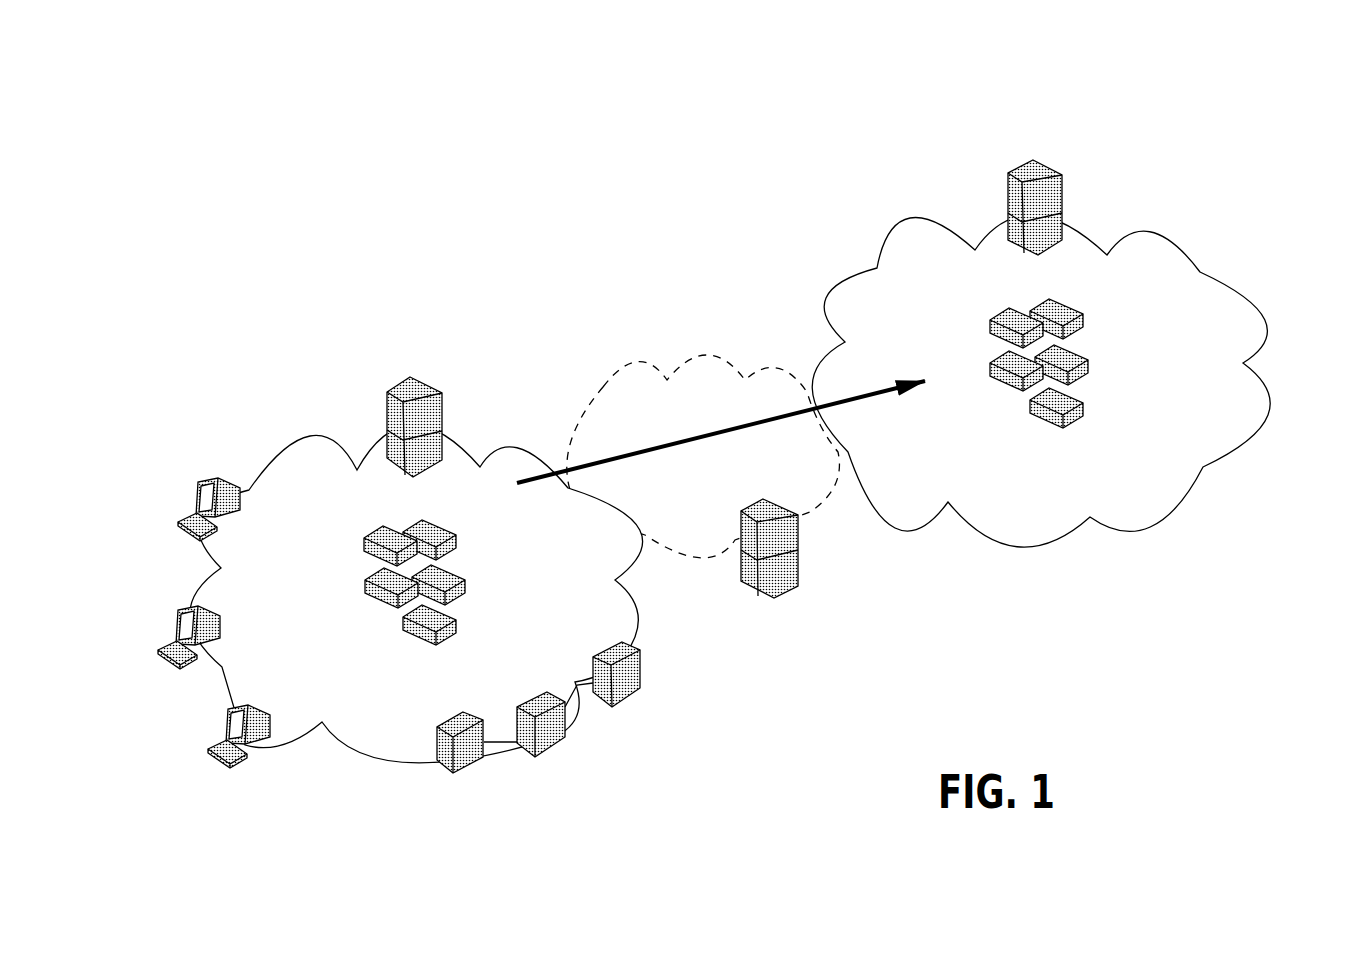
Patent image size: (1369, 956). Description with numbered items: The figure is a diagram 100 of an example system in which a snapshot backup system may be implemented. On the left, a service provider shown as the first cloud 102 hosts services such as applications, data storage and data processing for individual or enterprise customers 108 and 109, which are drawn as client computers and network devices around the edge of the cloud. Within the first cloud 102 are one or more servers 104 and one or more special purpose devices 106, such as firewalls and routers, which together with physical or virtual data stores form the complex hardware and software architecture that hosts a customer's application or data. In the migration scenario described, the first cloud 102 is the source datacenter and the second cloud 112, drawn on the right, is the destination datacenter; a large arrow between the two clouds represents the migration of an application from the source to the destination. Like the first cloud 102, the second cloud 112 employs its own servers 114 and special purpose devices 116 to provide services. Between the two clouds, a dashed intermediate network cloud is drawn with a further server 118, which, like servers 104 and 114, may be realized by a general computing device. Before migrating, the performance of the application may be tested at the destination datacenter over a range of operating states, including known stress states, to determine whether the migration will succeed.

The diagram 100 is at (1202, 92).
The cloud 1 102 is at (416, 594).
The servers 104 is at (423, 371).
The special purpose devices 106 is at (462, 533).
The customers 108 is at (217, 745).
The customers 109 is at (485, 760).
The cloud 2 112 is at (1041, 381).
The servers 114 is at (1043, 152).
The special purpose devices 116 is at (1085, 314).
The server 118 is at (788, 603).